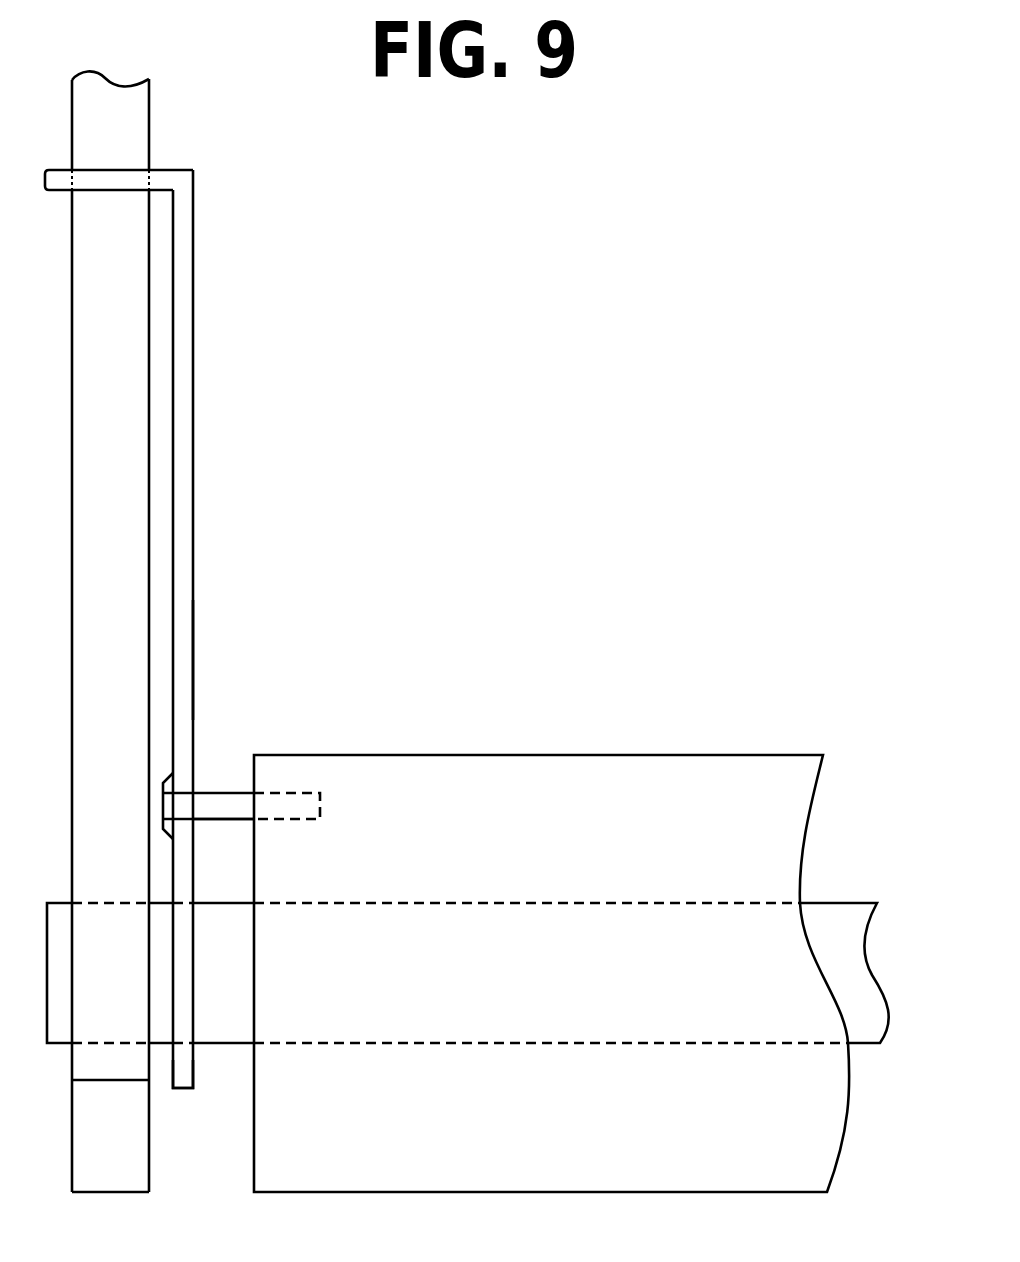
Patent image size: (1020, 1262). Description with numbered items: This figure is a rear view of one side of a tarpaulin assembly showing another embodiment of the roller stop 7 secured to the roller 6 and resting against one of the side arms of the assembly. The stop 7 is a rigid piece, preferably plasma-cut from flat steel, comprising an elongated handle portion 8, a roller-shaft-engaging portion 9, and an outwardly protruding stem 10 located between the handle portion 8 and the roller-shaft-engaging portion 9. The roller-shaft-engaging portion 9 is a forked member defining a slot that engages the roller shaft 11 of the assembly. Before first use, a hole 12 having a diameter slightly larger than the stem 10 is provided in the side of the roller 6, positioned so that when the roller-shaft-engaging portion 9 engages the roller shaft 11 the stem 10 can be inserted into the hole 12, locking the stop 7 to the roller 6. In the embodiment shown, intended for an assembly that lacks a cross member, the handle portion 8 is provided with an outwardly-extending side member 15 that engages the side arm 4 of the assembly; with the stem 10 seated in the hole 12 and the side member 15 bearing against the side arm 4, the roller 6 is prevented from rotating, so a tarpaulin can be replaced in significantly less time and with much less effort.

The side arm 4 is at (130, 532).
The roller 6 is at (695, 780).
The roller stop 7 is at (202, 657).
The handle portion 8 is at (182, 318).
The roller-shaft-engaging portion 9 is at (183, 1077).
The stem 10 is at (228, 798).
The roller shaft 11 is at (825, 905).
The hole 12 is at (253, 820).
The side member 15 is at (110, 177).